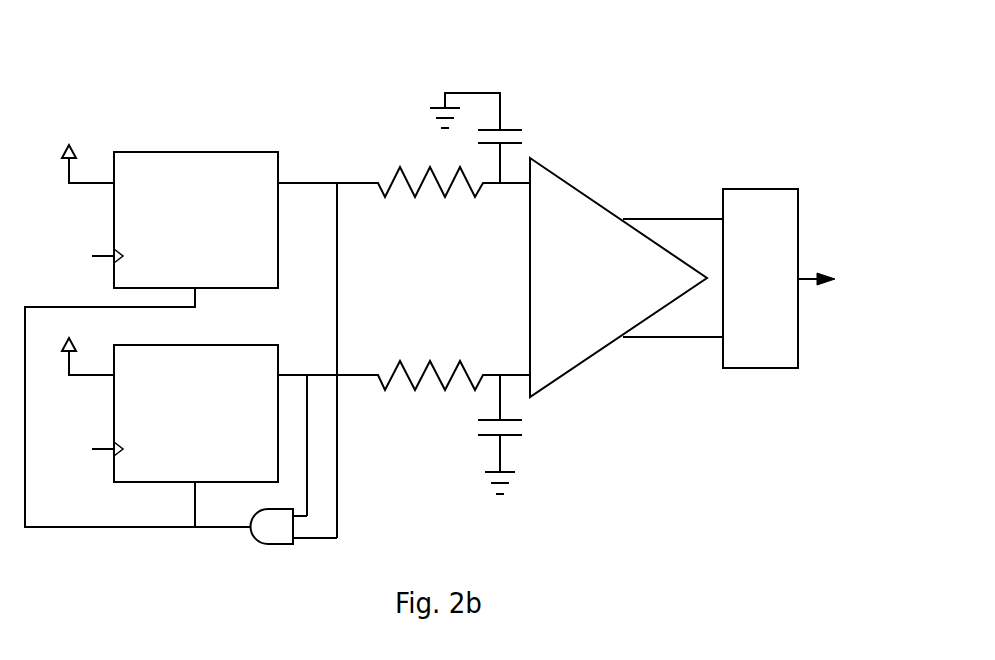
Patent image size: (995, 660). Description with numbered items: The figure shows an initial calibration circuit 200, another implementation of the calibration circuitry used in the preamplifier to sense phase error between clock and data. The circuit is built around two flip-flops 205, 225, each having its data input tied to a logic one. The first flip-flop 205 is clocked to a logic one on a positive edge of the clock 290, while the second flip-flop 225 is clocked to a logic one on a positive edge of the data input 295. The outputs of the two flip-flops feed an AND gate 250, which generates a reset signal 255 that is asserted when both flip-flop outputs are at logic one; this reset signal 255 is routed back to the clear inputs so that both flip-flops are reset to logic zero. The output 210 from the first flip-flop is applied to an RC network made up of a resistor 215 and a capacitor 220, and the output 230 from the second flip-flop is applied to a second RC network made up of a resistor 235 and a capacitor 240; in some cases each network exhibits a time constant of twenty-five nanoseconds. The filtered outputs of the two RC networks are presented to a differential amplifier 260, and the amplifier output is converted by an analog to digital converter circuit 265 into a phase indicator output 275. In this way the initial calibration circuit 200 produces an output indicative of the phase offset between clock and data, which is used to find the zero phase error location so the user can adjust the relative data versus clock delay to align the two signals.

The initial calibration circuit 200 is at (166, 101).
The flip-flop 205 is at (170, 216).
The output 210 is at (370, 181).
The resistor 215 is at (419, 198).
The capacitor 220 is at (510, 130).
The flip-flop 225 is at (170, 410).
The output 230 is at (370, 373).
The resistor 235 is at (419, 391).
The capacitor 240 is at (516, 436).
The AND gate 250 is at (279, 546).
The reset signal 255 is at (90, 528).
The differential amplifier 260 is at (626, 277).
The analog to digital converter circuit 265 is at (760, 278).
The phase indicator output 275 is at (860, 264).
The clock 290 is at (68, 244).
The data input 295 is at (68, 437).